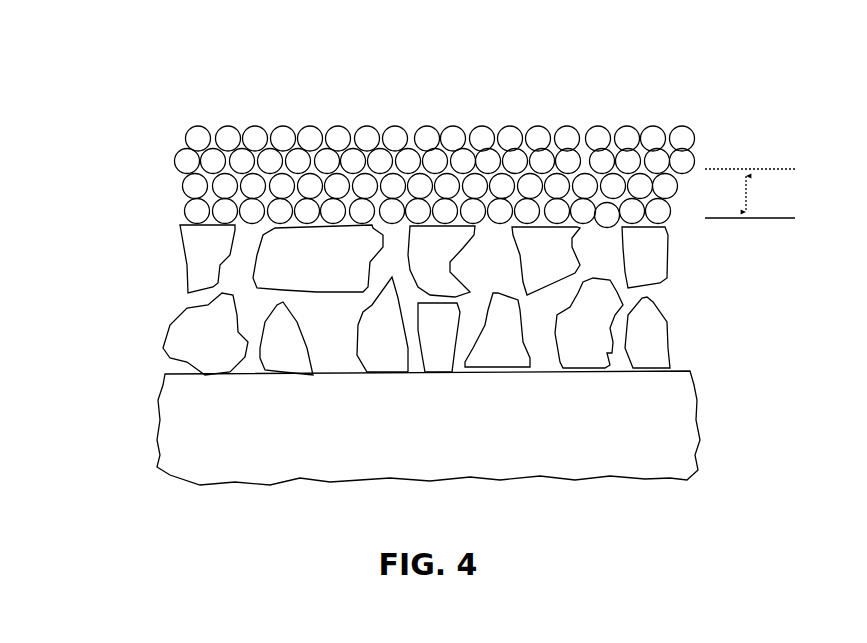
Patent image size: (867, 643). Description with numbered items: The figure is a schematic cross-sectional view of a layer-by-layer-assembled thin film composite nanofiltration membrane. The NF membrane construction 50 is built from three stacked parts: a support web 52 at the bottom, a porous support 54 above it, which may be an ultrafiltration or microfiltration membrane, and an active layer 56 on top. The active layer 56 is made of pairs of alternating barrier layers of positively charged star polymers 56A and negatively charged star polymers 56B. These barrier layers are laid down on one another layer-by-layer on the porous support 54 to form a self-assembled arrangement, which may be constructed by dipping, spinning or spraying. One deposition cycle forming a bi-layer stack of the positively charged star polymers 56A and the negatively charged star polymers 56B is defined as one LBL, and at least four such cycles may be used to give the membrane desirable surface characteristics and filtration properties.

The NF membrane construction 50 is at (417, 53).
The support web 52 is at (140, 483).
The porous support 54 is at (140, 377).
The active layer 56 is at (366, 179).
The positively charged star polymers 56A is at (123, 163).
The negatively charged star polymers 56B is at (142, 133).